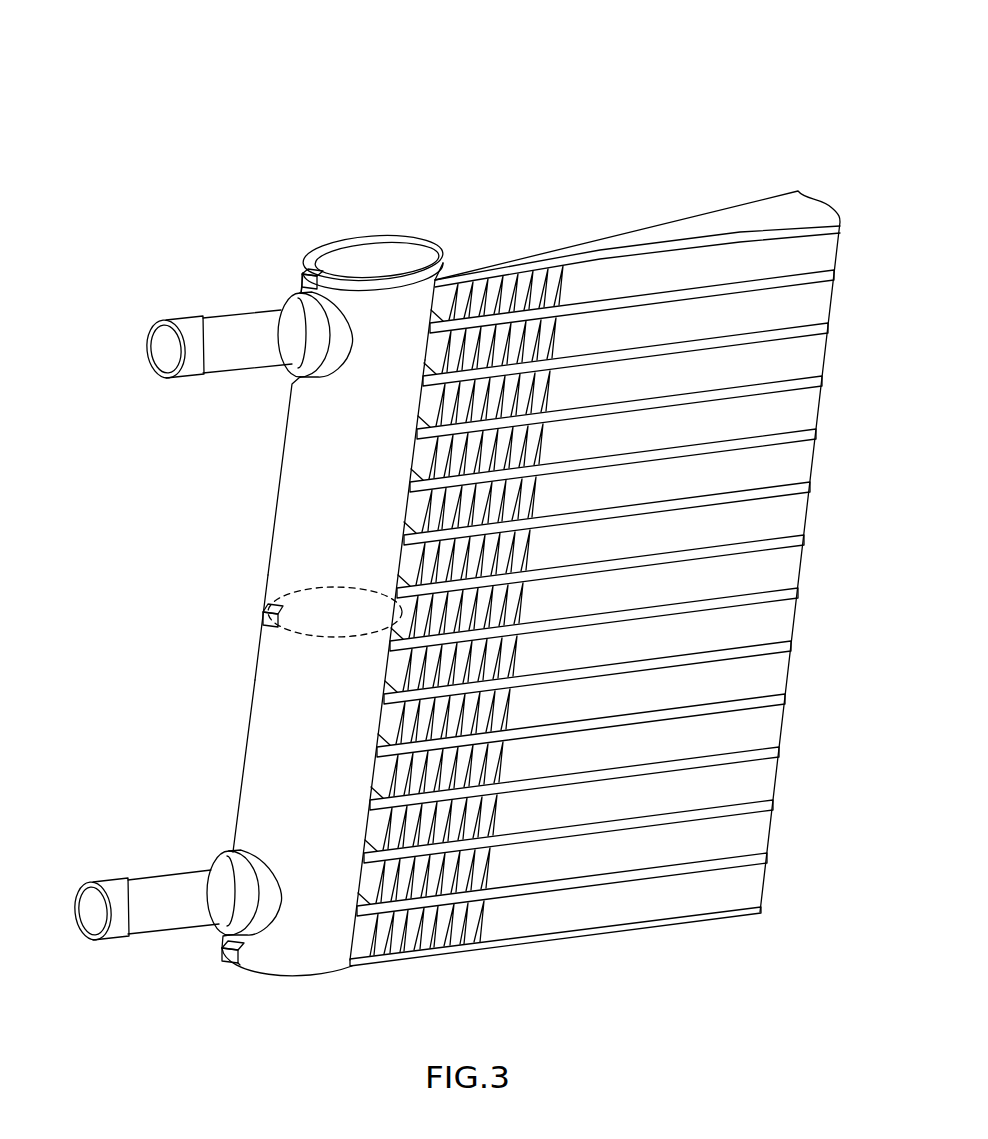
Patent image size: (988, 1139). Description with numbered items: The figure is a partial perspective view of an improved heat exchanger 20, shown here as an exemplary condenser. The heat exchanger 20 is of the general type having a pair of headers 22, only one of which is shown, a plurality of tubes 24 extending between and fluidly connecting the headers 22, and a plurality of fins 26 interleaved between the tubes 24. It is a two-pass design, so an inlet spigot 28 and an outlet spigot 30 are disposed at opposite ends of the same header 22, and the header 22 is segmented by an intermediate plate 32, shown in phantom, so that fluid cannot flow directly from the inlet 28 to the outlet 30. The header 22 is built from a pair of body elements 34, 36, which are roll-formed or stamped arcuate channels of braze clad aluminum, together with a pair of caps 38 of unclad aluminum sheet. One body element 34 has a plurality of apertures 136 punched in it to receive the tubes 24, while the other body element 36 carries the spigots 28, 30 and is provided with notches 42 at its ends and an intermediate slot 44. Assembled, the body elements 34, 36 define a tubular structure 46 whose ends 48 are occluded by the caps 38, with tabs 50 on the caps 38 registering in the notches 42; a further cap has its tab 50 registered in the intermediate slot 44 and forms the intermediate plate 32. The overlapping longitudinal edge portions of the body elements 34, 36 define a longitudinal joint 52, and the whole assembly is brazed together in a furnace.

The heat exchanger 20 is at (190, 158).
The header 22 is at (262, 552).
The tubes 24 is at (607, 668).
The fins 26 is at (514, 862).
The inlet spigot 28 is at (247, 343).
The outlet spigot 30 is at (165, 888).
The intermediate plate 32 is at (318, 636).
The body element 34 is at (427, 300).
The body element 36 is at (370, 310).
The cap 38 is at (387, 262).
The notch 42 is at (326, 294).
The intermediate slot 44 is at (260, 633).
The tubular structure 46 is at (240, 737).
The end 48 is at (268, 248).
The tab 50 is at (300, 279).
The longitudinal joint 52 is at (365, 545).
The apertures 136 is at (370, 745).